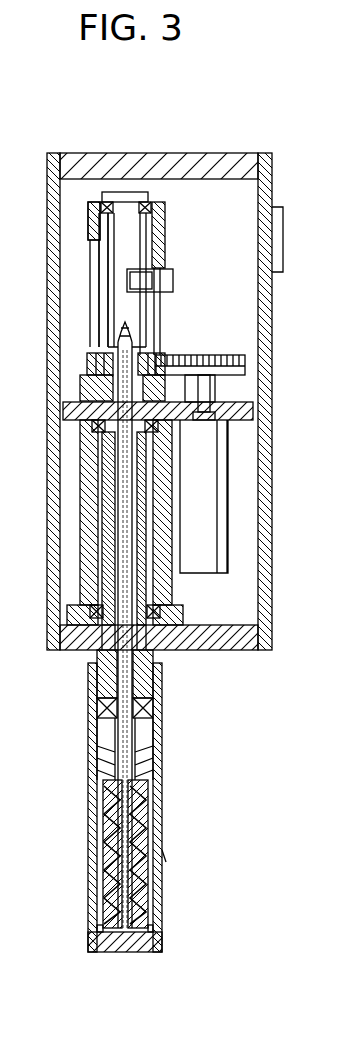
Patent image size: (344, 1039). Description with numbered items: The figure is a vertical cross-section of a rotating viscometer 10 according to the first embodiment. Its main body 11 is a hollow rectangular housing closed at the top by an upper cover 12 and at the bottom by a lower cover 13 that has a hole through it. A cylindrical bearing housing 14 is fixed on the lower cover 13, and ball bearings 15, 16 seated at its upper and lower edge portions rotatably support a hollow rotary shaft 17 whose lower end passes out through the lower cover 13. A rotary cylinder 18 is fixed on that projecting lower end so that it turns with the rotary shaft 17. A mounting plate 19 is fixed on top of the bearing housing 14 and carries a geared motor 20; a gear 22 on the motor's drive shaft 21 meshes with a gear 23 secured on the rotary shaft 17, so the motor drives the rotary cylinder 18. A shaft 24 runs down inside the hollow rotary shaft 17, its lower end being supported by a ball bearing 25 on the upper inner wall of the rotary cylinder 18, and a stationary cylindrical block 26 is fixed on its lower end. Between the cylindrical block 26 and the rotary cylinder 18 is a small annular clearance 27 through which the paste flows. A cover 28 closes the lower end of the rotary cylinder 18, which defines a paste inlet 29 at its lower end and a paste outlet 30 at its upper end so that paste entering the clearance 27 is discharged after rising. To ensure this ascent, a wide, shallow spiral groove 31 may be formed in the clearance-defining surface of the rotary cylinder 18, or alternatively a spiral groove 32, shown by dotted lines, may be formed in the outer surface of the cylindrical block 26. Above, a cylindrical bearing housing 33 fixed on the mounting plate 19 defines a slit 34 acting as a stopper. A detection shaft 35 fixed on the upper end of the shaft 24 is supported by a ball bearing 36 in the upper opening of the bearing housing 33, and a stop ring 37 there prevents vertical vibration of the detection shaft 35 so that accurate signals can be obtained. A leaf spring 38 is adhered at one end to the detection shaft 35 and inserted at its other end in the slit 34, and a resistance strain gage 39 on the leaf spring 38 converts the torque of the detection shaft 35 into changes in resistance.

The rotating viscometer 10 is at (208, 142).
The main body 11 is at (272, 307).
The upper cover 12 is at (70, 165).
The lower cover 13 is at (242, 650).
The bearing housing 14 is at (86, 470).
The ball bearing 15 is at (96, 428).
The ball bearing 16 is at (96, 612).
The rotary shaft 17 is at (108, 502).
The rotary cylinder 18 is at (92, 700).
The mounting plate 19 is at (74, 408).
The geared motor 20 is at (206, 574).
The drive shaft 21 is at (206, 388).
The gear 22 is at (222, 362).
The gear 23 is at (94, 362).
The shaft 24 is at (124, 556).
The ball bearing 25 is at (152, 710).
The cylindrical block 26 is at (140, 798).
The annular clearance 27 is at (104, 792).
The cover 28 is at (102, 952).
The paste inlet 29 is at (152, 934).
The paste outlet 30 is at (160, 742).
The spiral groove 31 is at (148, 762).
The spiral groove 32 is at (170, 858).
The bearing housing 33 is at (88, 218).
The slit 34 is at (166, 246).
The detection shaft 35 is at (112, 252).
The ball bearing 36 is at (104, 206).
The stop ring 37 is at (150, 198).
The leaf spring 38 is at (164, 279).
The resistance strain gage 39 is at (150, 286).